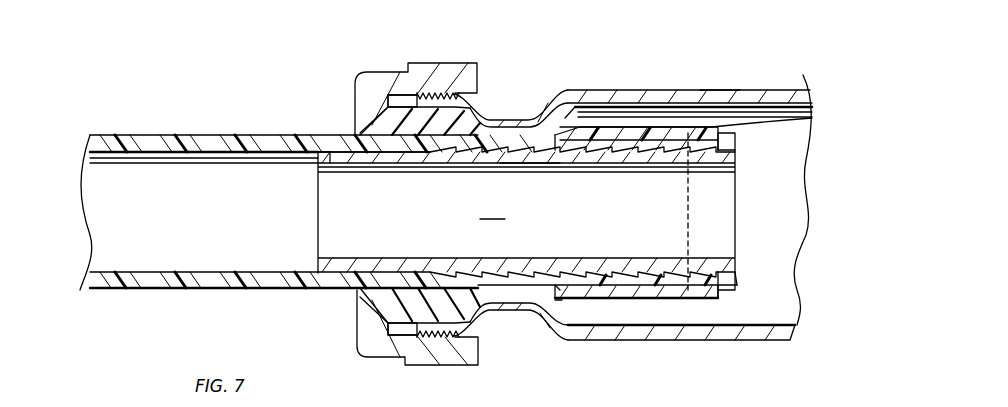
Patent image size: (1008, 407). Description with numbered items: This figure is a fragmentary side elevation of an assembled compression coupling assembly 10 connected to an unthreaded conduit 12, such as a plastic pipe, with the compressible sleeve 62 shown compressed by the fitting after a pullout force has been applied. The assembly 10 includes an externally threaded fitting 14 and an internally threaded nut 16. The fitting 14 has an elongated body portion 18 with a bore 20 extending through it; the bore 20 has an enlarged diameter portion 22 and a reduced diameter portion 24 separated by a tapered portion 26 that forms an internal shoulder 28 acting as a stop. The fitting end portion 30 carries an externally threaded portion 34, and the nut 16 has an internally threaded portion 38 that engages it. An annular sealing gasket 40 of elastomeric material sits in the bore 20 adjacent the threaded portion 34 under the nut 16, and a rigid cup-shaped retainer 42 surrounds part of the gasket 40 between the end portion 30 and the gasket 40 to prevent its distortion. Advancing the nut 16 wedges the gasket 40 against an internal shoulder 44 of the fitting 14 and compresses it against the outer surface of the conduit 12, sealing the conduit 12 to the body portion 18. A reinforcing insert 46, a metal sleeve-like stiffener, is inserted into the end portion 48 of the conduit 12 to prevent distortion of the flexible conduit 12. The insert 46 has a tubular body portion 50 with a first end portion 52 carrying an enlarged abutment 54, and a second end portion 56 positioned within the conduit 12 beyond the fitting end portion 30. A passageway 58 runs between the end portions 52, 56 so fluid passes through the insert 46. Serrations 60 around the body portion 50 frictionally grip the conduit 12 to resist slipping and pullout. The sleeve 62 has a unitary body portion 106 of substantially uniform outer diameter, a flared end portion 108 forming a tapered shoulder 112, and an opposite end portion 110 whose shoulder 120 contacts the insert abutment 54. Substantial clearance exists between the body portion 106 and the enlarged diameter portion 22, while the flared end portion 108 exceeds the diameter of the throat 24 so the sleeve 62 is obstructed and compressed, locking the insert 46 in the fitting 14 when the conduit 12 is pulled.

The compression coupling assembly 10 is at (235, 78).
The conduit 12 is at (150, 140).
The fitting 14 is at (678, 90).
The nut 16 is at (445, 66).
The body portion 18 is at (716, 95).
The bore 20 is at (585, 108).
The enlarged diameter portion 22 is at (785, 100).
The reduced diameter portion 24 is at (507, 118).
The tapered portion 26 is at (542, 314).
The internal shoulder 28 is at (562, 309).
The end portion 30 is at (410, 100).
The externally threaded portion 34 is at (415, 325).
The internally threaded portion 38 is at (440, 332).
The annular sealing gasket 40 is at (387, 122).
The cup-shaped retainer 42 is at (390, 302).
The internal shoulder 44 is at (463, 148).
The reinforcing insert 46 is at (317, 208).
The end portion 48 is at (648, 290).
The tubular body portion 50 is at (535, 160).
The first end portion 52 is at (720, 158).
The abutment 54 is at (728, 140).
The second end portion 56 is at (328, 160).
The passageway 58 is at (492, 210).
The serrations 60 is at (540, 272).
The compressible sleeve 62 is at (653, 310).
The body portion 106 is at (680, 292).
The flared end portion 108 is at (577, 290).
The end portion 110 is at (778, 118).
The tapered shoulder 112 is at (592, 117).
The shoulder 120 is at (705, 290).